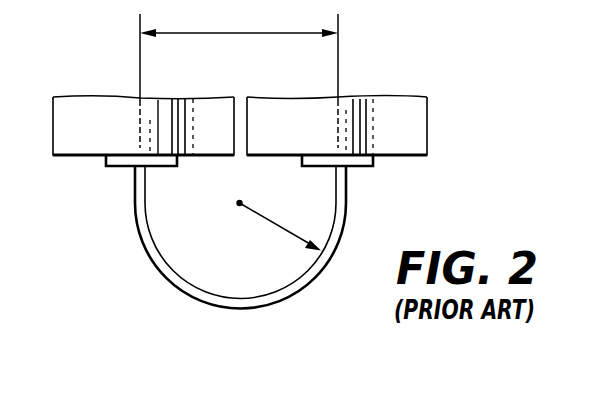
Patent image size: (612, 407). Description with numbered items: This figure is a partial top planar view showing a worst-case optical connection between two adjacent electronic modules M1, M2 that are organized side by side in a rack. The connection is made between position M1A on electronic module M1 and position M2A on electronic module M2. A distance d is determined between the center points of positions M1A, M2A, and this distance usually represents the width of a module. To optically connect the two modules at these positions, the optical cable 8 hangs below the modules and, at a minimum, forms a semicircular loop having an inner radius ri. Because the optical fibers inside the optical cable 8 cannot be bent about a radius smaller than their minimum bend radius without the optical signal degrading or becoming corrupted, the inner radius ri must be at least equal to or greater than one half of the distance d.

The optical cable 8 is at (148, 255).
The electronic module M1 is at (83, 103).
The electronic module M2 is at (382, 103).
The position M1A is at (111, 168).
The position M2A is at (370, 168).
The distance d is at (239, 78).
The inner radius ri is at (278, 218).